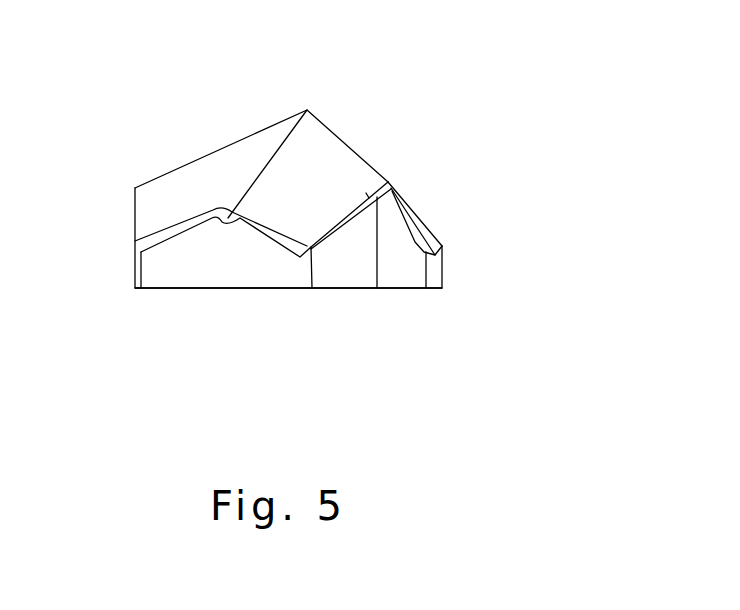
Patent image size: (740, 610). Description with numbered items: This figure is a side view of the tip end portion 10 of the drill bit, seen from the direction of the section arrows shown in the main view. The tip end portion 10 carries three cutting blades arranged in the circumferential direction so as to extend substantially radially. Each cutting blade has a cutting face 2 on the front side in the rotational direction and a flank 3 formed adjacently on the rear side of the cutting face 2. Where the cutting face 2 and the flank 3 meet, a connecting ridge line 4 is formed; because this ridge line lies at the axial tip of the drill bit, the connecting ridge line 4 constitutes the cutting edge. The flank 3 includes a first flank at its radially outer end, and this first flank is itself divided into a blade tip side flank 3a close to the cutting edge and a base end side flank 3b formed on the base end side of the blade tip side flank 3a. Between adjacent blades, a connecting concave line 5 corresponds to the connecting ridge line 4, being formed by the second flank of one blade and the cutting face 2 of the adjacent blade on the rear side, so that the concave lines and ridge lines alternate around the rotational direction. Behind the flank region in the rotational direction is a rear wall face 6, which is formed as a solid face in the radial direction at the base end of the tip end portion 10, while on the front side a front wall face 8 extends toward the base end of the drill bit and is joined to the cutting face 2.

The tip end portion 10 is at (477, 223).
The cutting face 2 is at (200, 188).
The flank 3 is at (343, 172).
The blade tip side flank 3a is at (388, 183).
The base end side flank 3b is at (358, 210).
The connecting ridge line 4 is at (210, 152).
The connecting concave line 5 is at (268, 162).
The rear wall face 6 is at (278, 267).
The front wall face 8 is at (192, 275).